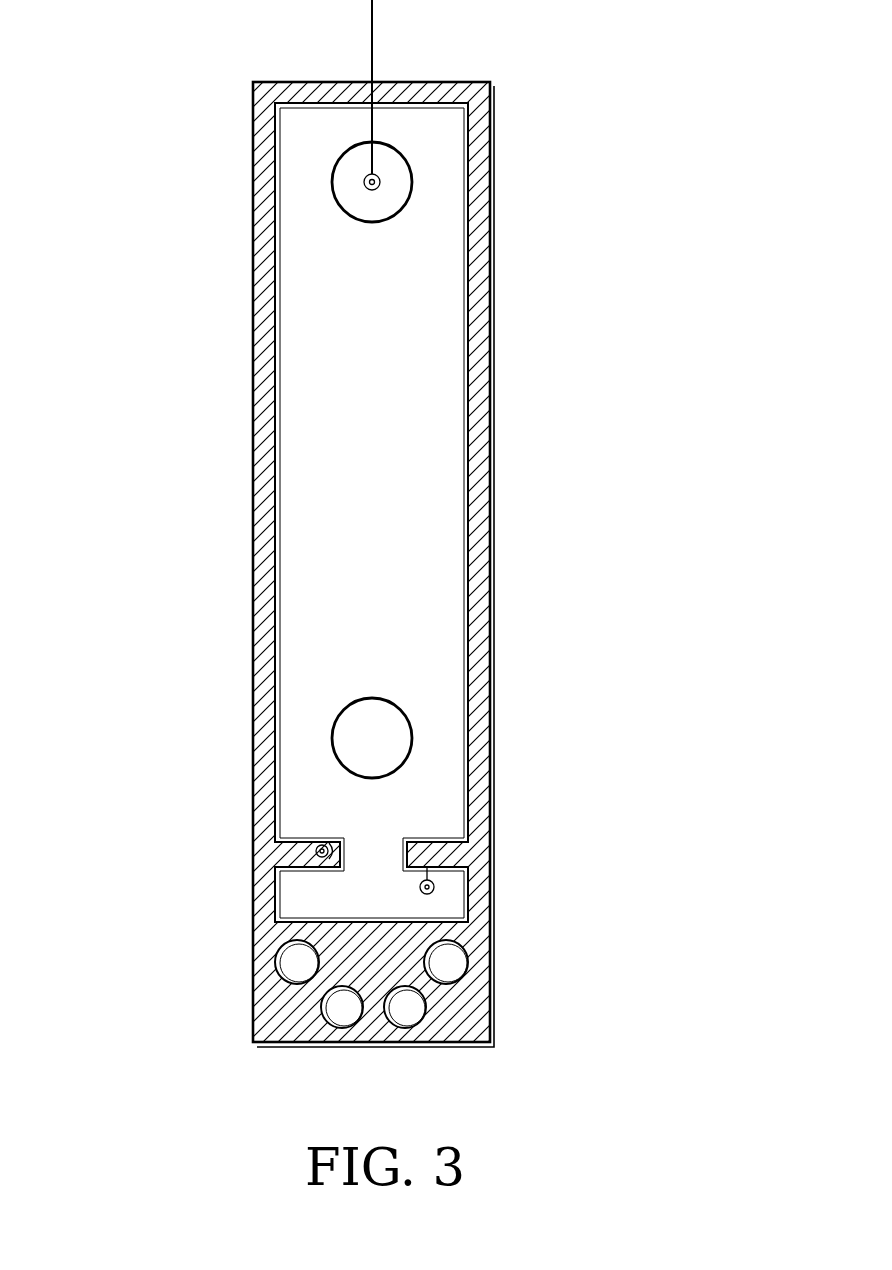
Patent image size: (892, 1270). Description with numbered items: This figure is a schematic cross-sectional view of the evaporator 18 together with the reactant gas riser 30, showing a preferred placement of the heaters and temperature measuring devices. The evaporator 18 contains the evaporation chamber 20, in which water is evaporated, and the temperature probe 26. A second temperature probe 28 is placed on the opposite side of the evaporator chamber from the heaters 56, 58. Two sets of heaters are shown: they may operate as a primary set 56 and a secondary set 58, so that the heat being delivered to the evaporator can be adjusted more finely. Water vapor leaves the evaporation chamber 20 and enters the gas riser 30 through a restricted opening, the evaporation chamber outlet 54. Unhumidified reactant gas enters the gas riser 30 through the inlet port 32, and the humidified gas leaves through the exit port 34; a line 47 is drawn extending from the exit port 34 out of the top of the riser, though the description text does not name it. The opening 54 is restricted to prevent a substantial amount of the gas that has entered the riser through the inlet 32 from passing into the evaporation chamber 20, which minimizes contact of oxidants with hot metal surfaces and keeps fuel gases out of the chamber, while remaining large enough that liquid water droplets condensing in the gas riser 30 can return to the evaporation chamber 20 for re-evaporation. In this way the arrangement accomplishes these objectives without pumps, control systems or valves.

The evaporator 18 is at (208, 878).
The evaporation chamber 20 is at (318, 895).
The temperature probe 26 is at (434, 890).
The second temperature probe 28 is at (316, 851).
The gas riser 30 is at (495, 560).
The inlet port 32 is at (412, 738).
The exit port 34 is at (412, 182).
The wire 47 is at (376, 22).
The evaporation chamber outlet 54 is at (387, 845).
The primary set of heaters 56 is at (277, 960).
The secondary set of heaters 58 is at (350, 1028).